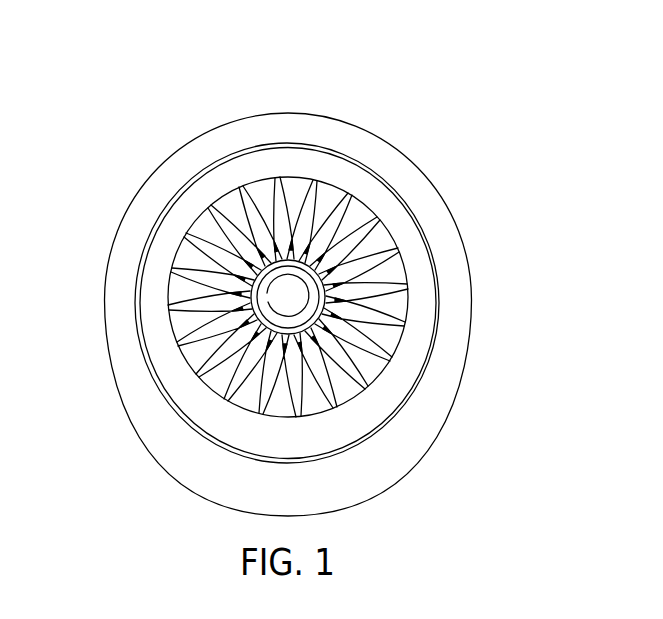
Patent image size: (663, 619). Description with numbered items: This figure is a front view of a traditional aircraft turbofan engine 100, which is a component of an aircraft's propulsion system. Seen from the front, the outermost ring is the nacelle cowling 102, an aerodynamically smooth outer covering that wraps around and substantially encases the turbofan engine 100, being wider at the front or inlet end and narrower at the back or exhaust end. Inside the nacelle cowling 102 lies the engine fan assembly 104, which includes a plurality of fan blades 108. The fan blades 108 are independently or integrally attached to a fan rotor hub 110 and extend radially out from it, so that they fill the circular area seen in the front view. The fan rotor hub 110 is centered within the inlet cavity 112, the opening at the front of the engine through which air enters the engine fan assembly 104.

The turbofan engine 100 is at (220, 103).
The nacelle cowling 102 is at (157, 171).
The engine fan assembly 104 is at (345, 203).
The fan blades 108 is at (377, 255).
The fan rotor hub 110 is at (282, 293).
The inlet cavity 112 is at (418, 325).